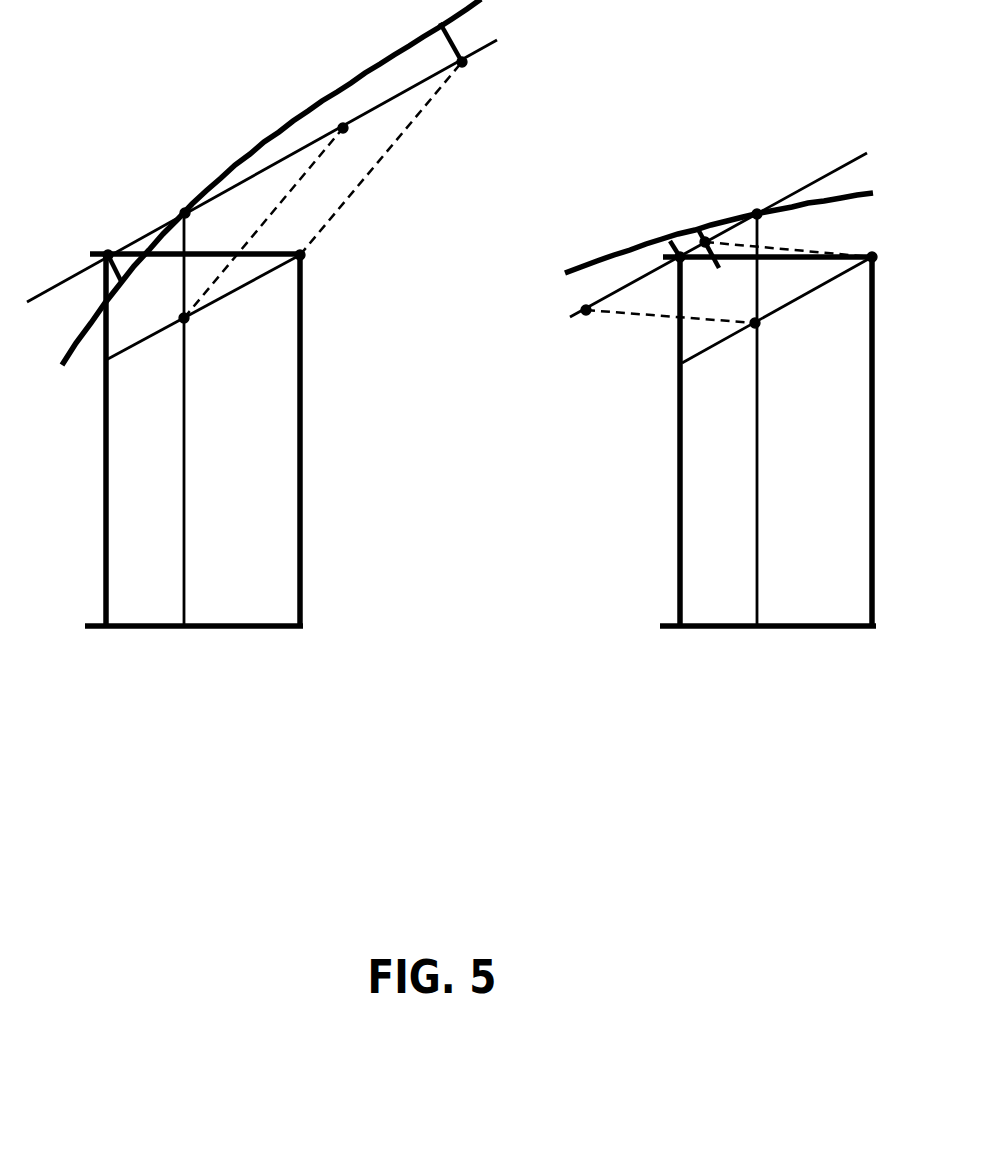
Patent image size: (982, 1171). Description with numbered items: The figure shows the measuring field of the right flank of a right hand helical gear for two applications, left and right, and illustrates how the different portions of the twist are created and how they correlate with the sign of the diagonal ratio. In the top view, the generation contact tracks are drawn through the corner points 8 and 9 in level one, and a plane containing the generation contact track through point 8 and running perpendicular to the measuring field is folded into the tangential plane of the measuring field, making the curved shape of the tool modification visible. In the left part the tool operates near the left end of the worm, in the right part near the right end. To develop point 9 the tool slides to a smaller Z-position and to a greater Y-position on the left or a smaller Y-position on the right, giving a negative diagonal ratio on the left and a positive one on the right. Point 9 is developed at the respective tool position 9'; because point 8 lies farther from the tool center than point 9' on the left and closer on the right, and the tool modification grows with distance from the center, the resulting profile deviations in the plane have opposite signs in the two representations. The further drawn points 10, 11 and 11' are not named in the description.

The corner point 8 is at (398, 252).
The corner point 9 is at (607, 272).
The tool position 9' is at (597, 166).
The intersection point of curve and centre line 10 is at (458, 189).
The point on centre line 11 is at (495, 344).
The shifted point on tangent 11' is at (478, 245).